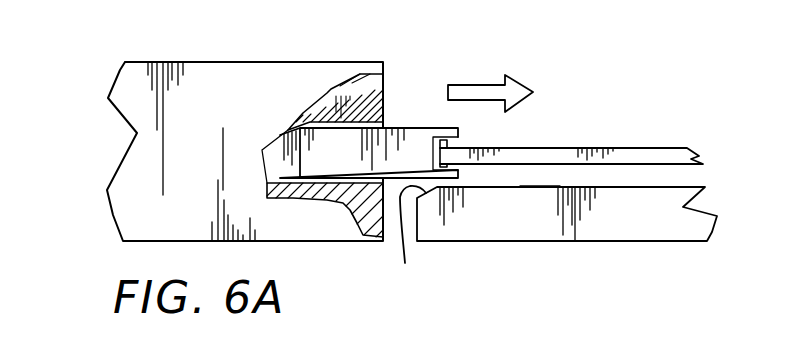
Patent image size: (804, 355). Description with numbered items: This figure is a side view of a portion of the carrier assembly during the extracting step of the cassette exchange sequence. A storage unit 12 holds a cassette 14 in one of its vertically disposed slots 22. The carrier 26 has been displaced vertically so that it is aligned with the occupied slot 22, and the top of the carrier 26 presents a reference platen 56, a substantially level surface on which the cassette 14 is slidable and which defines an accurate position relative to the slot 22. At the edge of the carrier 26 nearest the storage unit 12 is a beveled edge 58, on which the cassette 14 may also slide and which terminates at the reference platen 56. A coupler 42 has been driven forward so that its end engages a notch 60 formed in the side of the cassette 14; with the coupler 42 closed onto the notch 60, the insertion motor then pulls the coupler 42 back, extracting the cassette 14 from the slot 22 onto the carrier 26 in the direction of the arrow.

The storage unit 12 is at (233, 56).
The cassette 14 is at (395, 127).
The slot 22 is at (265, 160).
The carrier 26 is at (500, 228).
The coupler 42 is at (622, 157).
The reference platen 56 is at (543, 186).
The beveled edge 58 is at (403, 265).
The notch 60 is at (447, 140).